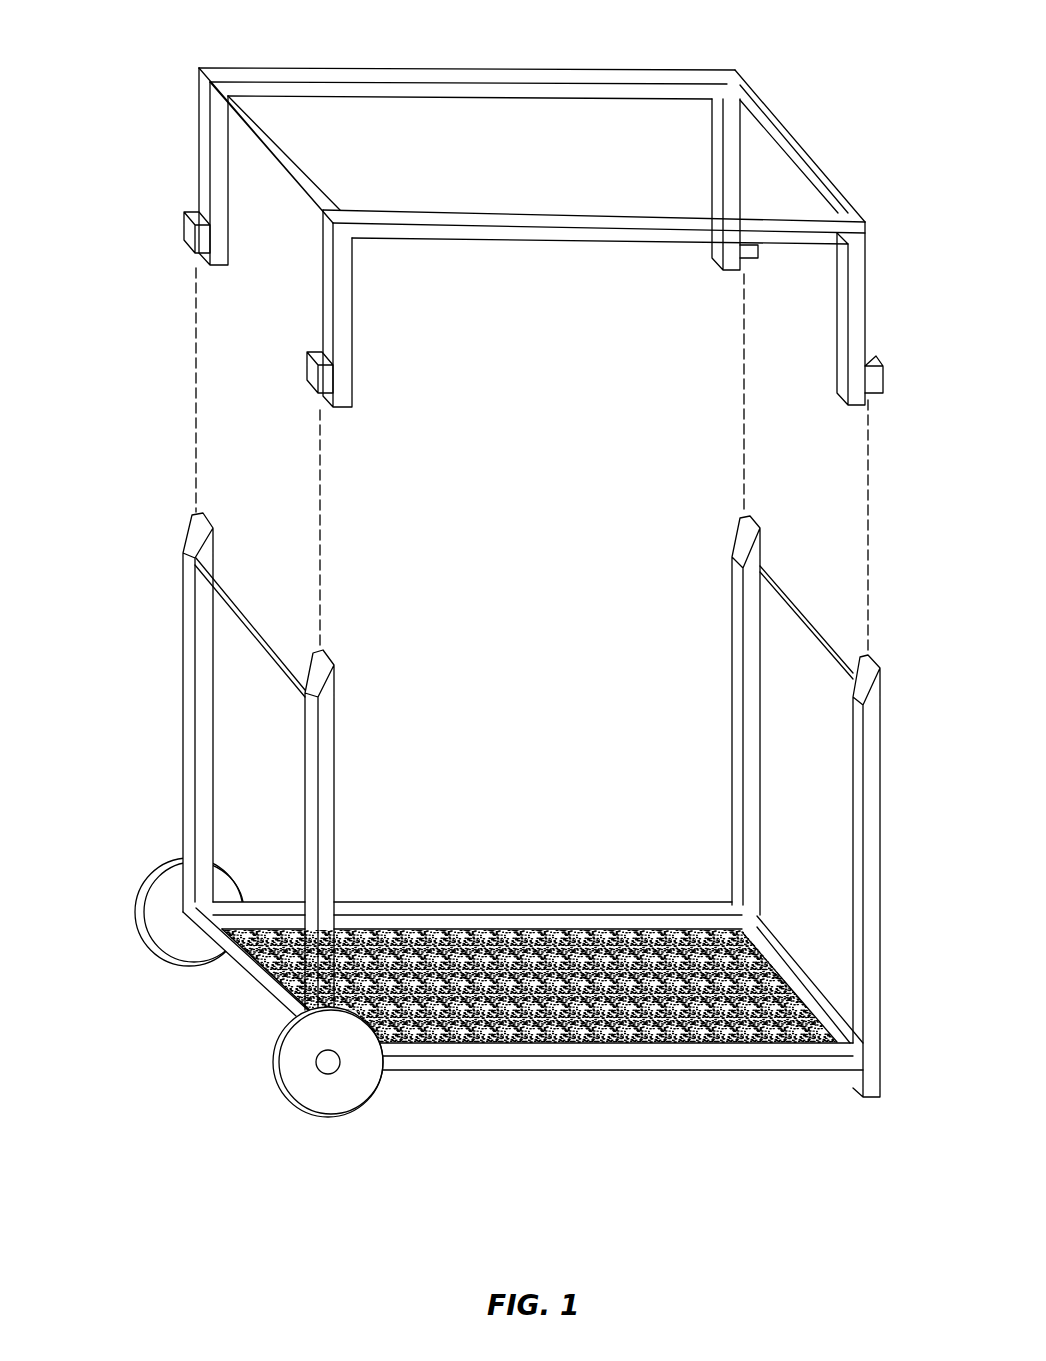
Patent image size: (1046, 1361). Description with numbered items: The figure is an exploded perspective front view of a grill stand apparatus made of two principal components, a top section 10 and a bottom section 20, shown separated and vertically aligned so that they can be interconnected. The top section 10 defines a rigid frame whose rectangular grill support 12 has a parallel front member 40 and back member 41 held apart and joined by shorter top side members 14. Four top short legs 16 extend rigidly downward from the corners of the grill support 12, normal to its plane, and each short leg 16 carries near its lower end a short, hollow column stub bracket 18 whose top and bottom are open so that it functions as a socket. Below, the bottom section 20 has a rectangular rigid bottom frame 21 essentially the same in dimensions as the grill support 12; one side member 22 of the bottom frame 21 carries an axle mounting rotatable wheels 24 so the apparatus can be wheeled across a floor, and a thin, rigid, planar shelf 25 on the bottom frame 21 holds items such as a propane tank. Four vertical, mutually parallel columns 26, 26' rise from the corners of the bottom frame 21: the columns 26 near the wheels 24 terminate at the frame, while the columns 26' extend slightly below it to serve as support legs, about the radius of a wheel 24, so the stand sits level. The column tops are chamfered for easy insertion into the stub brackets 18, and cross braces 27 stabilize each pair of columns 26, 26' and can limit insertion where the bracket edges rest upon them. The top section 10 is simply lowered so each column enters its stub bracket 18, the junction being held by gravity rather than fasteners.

The top section 10 is at (146, 50).
The grill support 12 is at (560, 230).
The top side members 14 is at (283, 150).
The top short legs 16 is at (203, 152).
The column stub bracket 18 is at (186, 235).
The bottom section 20 is at (216, 1111).
The bottom frame 21 is at (505, 900).
The side member 22 is at (248, 978).
The wheels 24 is at (160, 910).
The shelf 25 is at (548, 997).
The bottom section columns 26 is at (227, 761).
The bottom section columns 26' is at (766, 806).
The cross braces 27 is at (274, 657).
The front member 40 is at (513, 213).
The back member 41 is at (513, 87).